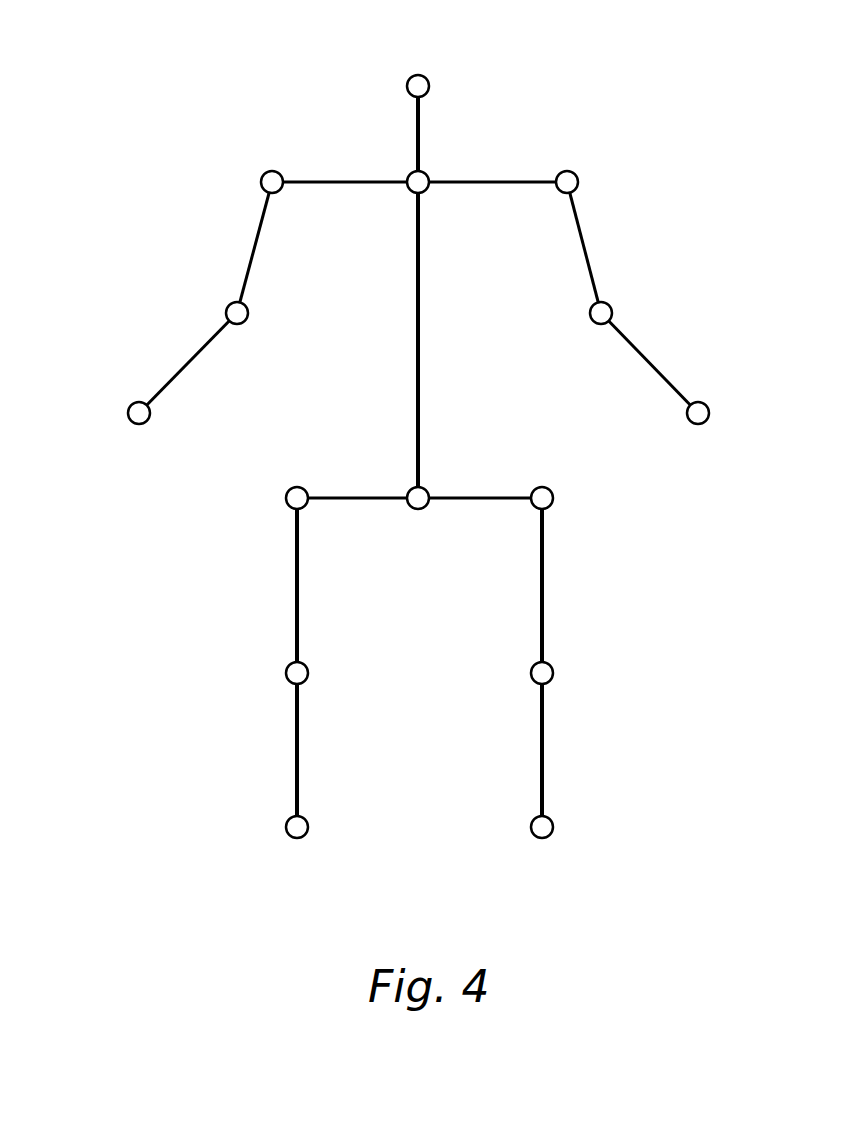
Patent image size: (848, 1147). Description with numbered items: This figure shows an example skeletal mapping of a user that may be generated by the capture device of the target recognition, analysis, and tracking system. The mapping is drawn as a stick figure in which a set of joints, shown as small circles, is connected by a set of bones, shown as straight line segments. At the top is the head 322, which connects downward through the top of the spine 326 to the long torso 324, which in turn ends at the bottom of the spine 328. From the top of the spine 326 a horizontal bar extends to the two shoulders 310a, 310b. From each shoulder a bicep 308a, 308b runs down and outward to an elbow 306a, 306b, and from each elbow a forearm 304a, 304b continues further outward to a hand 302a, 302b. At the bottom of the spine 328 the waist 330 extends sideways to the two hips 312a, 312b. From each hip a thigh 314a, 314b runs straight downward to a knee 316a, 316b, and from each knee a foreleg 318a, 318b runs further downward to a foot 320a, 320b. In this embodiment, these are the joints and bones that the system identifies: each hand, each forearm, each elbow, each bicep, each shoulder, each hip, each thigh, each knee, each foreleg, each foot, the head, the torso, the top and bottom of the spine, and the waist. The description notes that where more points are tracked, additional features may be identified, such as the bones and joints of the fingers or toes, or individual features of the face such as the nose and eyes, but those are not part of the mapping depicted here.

The hand 302a is at (128, 412).
The hand 302b is at (710, 412).
The forearm 304a is at (190, 358).
The forearm 304b is at (645, 358).
The elbow 306a is at (228, 305).
The elbow 306b is at (612, 305).
The bicep 308a is at (258, 230).
The bicep 308b is at (582, 232).
The shoulder 310a is at (270, 170).
The shoulder 310b is at (572, 170).
The hip 312a is at (286, 492).
The hip 312b is at (553, 492).
The thigh 314a is at (293, 590).
The thigh 314b is at (545, 572).
The knee 316a is at (286, 672).
The knee 316b is at (553, 672).
The foreleg 318a is at (293, 750).
The foreleg 318b is at (545, 742).
The foot 320a is at (286, 826).
The foot 320b is at (553, 826).
The head 322 is at (415, 72).
The torso 324 is at (422, 325).
The top of the spine 326 is at (427, 173).
The bottom of the spine 328 is at (427, 488).
The waist 330 is at (478, 497).